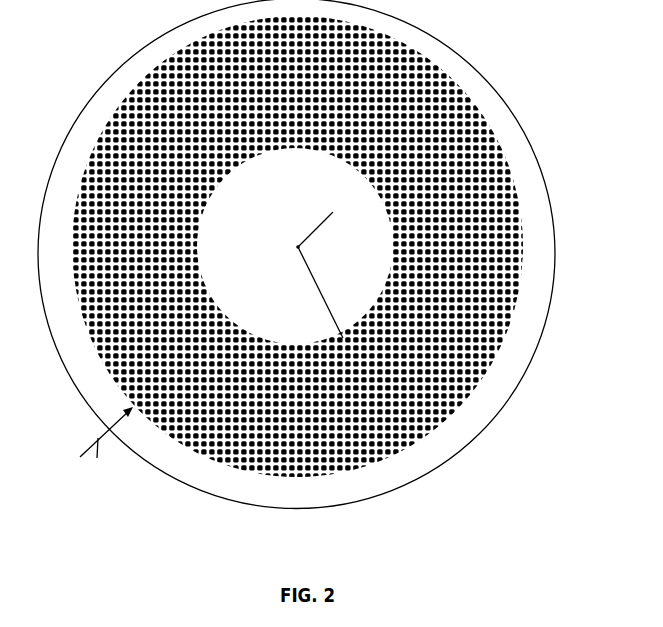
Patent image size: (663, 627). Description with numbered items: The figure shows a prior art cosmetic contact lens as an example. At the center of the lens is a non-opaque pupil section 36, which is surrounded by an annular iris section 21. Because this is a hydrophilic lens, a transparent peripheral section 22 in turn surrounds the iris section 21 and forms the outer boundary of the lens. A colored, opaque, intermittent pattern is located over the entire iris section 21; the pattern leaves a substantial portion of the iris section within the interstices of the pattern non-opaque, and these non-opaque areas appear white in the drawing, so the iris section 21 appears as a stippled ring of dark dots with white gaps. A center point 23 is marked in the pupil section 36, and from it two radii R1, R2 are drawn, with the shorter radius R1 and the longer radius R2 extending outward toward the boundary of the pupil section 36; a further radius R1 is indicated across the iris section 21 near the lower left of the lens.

The annular iris section 21 is at (190, 443).
The transparent peripheral section 22 is at (98, 372).
The center point 23 is at (297, 248).
The non-opaque pupil section 36 is at (295, 246).
The first radius R1 is at (333, 212).
The second radius R2 is at (318, 297).